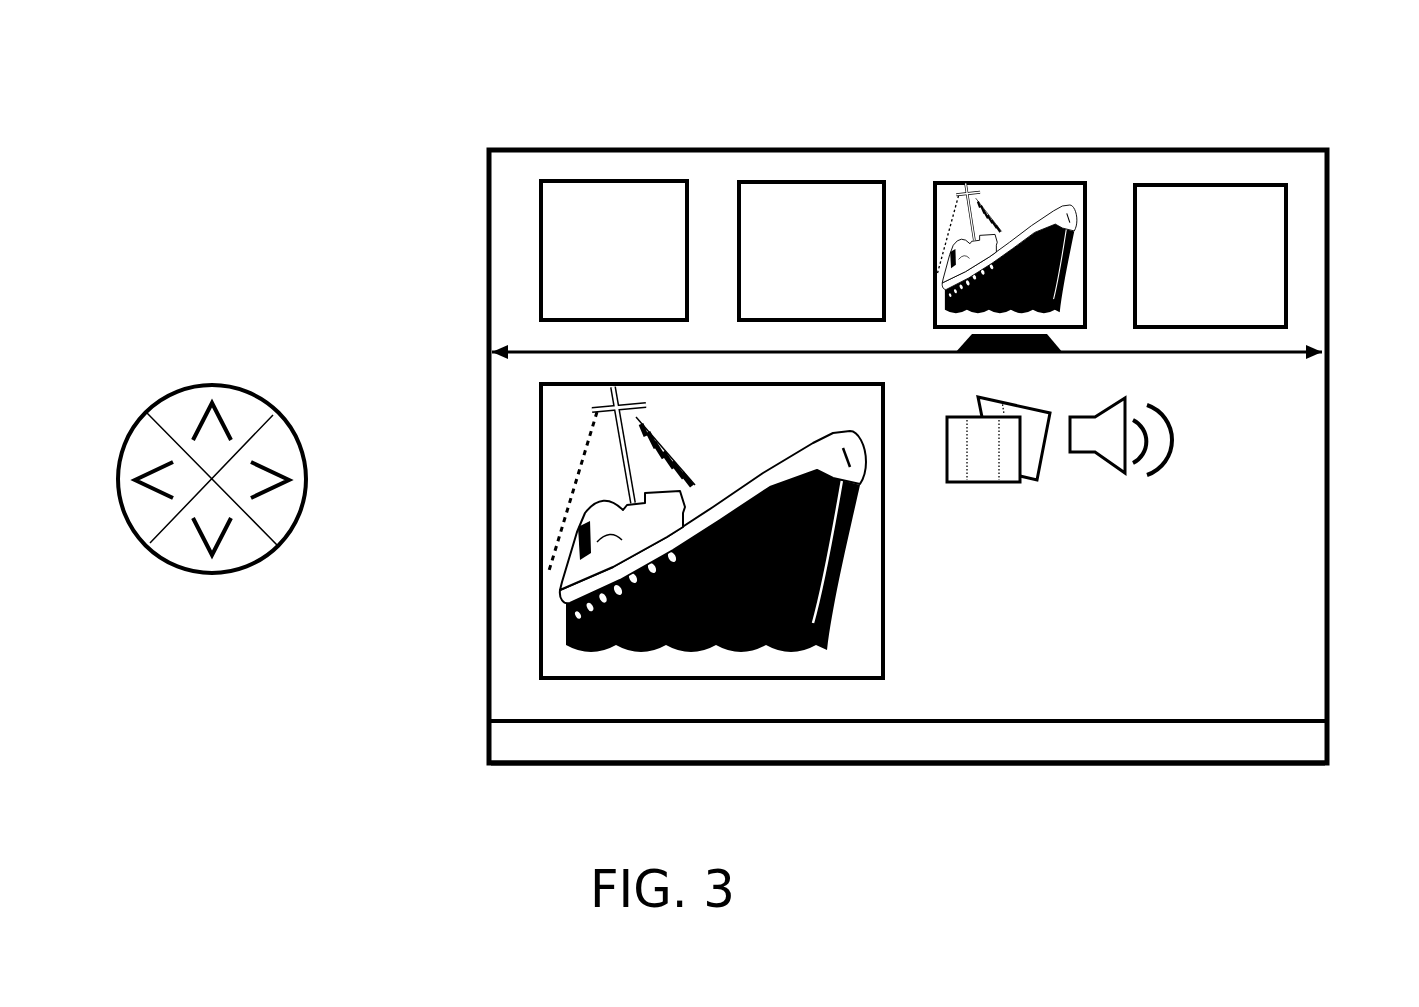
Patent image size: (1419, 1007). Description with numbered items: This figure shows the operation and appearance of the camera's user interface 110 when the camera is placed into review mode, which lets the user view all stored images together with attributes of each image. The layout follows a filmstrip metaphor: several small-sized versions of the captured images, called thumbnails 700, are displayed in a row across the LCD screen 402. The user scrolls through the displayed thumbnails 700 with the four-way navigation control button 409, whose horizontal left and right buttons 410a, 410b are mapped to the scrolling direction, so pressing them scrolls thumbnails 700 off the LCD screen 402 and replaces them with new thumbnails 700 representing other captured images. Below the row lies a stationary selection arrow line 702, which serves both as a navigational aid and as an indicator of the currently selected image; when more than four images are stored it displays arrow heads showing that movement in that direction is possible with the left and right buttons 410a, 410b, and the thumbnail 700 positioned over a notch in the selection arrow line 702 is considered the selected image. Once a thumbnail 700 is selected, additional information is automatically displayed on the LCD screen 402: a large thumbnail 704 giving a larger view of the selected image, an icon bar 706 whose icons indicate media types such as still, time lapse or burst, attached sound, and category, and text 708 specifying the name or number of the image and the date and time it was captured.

The LCD display screen 110 is at (1044, 39).
The LCD screen 402 is at (1062, 767).
The four-way navigation control button 409 is at (207, 385).
The left button 410a is at (120, 498).
The right button 410b is at (307, 500).
The thumbnails 700 is at (1223, 184).
The selection arrow line 702 is at (540, 350).
The large thumbnail 704 is at (532, 548).
The icon bar 706 is at (1262, 433).
The text 708 is at (1232, 557).